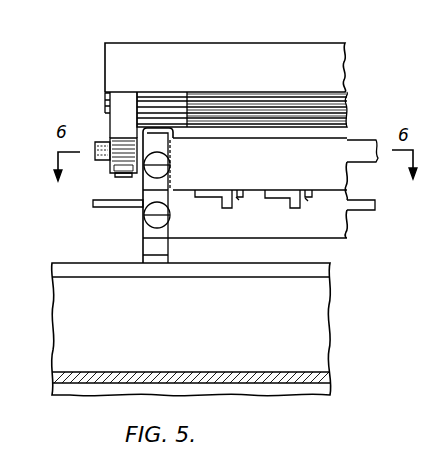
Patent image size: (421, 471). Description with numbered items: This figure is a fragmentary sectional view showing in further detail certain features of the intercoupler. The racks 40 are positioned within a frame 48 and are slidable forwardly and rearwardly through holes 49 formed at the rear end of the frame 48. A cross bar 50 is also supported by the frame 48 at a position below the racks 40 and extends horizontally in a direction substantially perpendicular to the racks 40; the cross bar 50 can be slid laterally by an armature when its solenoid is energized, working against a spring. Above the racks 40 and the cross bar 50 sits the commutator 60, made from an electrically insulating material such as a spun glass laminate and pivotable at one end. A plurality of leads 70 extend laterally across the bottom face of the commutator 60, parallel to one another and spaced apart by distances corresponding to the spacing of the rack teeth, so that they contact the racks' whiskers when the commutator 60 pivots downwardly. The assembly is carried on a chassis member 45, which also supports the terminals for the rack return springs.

The commutator 60 is at (345, 52).
The leads 70 is at (348, 110).
The frame 48 is at (343, 232).
The cross bar 50 is at (366, 209).
The racks 40 is at (214, 192).
The holes 49 is at (240, 197).
The chassis member 45 is at (312, 332).